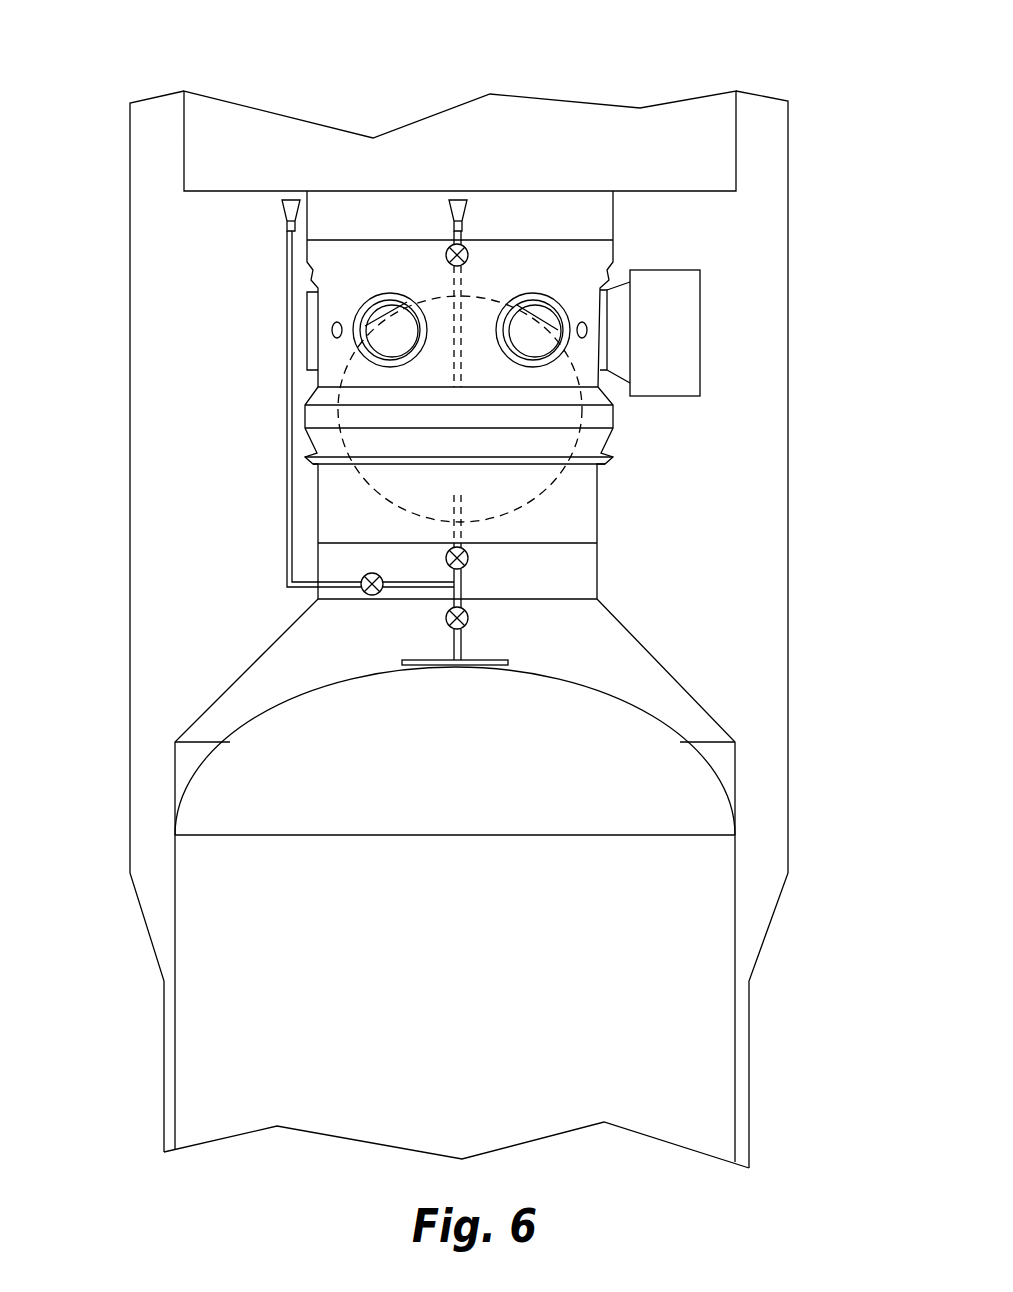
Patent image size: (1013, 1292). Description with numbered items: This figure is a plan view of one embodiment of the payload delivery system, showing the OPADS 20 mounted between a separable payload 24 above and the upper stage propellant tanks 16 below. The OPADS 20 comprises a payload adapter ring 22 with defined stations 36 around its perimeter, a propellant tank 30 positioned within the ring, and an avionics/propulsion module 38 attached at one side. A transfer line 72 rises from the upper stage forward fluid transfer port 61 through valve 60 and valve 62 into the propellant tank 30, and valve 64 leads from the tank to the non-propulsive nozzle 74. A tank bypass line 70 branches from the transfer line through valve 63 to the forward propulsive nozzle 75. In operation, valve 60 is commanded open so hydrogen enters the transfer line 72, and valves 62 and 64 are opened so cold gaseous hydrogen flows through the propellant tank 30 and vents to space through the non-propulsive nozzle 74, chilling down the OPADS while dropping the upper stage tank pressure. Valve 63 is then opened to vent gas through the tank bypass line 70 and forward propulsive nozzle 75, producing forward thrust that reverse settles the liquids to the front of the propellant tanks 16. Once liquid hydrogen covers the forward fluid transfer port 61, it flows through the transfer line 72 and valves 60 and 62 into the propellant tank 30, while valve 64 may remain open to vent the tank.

The propellant tanks 16 is at (710, 913).
The OPADS 20 is at (203, 556).
The payload adapter ring 22 is at (615, 252).
The separable payload 24 is at (697, 118).
The propellant tank 30 is at (557, 445).
The stations 36 is at (530, 292).
The avionics/propulsion module 38 is at (683, 333).
The valve 60 is at (445, 618).
The forward fluid transfer port 61 is at (453, 660).
The valve 62 is at (467, 557).
The valve 63 is at (375, 568).
The valve 64 is at (477, 248).
The tank bypass line 70 is at (286, 366).
The transfer line 72 is at (462, 594).
The non-propulsive nozzle 74 is at (467, 218).
The forward propulsive nozzle 75 is at (284, 219).